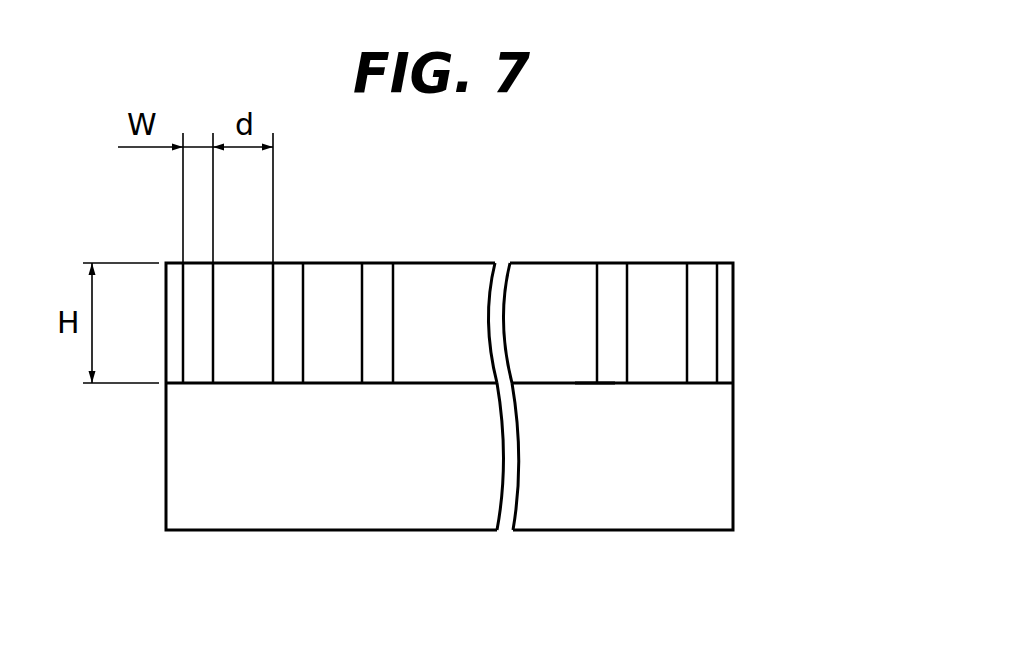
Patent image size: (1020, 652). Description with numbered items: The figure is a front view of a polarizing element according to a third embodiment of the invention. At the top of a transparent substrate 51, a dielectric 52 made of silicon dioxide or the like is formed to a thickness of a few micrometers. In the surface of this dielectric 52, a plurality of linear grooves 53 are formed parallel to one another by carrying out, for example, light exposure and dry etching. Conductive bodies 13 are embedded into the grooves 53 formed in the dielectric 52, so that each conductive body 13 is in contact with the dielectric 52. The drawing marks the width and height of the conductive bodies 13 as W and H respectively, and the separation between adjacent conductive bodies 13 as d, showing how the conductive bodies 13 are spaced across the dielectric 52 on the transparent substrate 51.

The conductive body 13 is at (611, 276).
The transparent substrate 51 is at (453, 514).
The dielectric 52 is at (668, 320).
The linear groove 53 is at (610, 383).